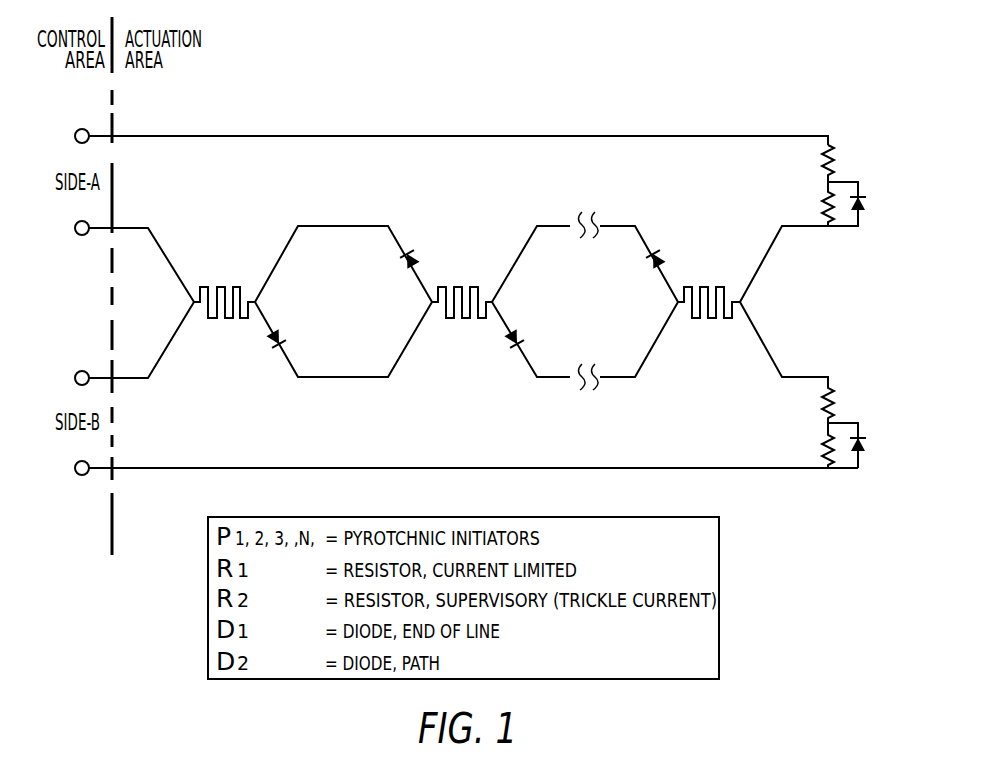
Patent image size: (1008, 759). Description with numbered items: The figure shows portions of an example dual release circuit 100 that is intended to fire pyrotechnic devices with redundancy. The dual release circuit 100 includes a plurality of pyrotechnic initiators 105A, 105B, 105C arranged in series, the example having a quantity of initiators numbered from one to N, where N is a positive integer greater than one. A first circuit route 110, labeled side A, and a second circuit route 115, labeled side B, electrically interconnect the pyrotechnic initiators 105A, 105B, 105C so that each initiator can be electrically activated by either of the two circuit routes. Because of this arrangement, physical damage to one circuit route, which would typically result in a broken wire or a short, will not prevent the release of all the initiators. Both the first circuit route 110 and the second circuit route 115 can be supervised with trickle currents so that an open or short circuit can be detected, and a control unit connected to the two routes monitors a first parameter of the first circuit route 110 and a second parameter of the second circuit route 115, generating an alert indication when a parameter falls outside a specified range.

The dual release circuit 100 is at (788, 44).
The first circuit route 110 is at (175, 263).
The second circuit route 115 is at (174, 340).
The pyrotechnic initiator 105A is at (227, 321).
The pyrotechnic initiator 105B is at (466, 321).
The pyrotechnic initiator 105C is at (712, 321).